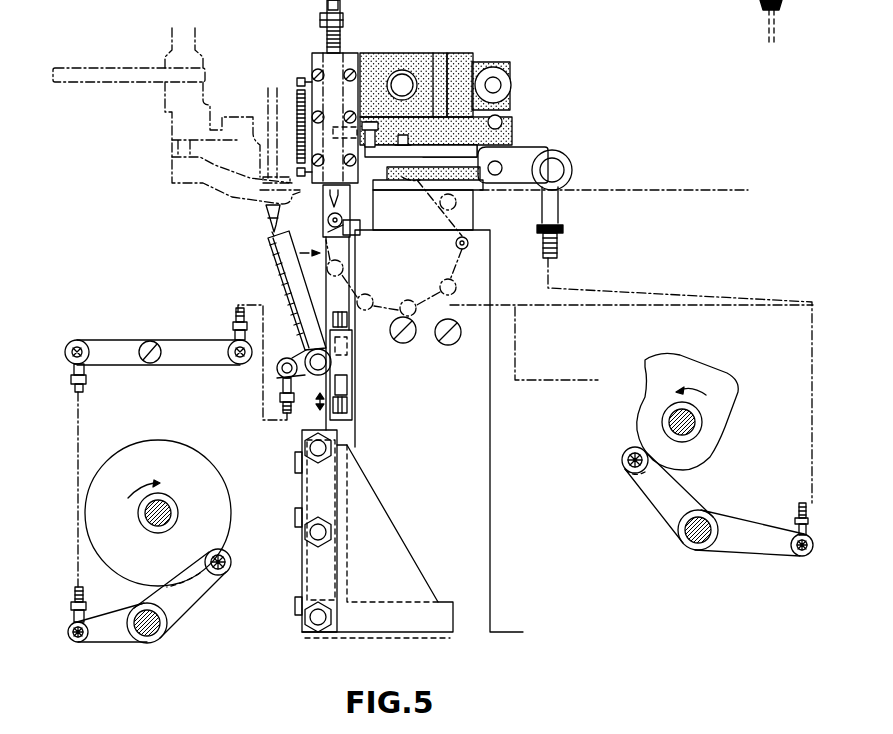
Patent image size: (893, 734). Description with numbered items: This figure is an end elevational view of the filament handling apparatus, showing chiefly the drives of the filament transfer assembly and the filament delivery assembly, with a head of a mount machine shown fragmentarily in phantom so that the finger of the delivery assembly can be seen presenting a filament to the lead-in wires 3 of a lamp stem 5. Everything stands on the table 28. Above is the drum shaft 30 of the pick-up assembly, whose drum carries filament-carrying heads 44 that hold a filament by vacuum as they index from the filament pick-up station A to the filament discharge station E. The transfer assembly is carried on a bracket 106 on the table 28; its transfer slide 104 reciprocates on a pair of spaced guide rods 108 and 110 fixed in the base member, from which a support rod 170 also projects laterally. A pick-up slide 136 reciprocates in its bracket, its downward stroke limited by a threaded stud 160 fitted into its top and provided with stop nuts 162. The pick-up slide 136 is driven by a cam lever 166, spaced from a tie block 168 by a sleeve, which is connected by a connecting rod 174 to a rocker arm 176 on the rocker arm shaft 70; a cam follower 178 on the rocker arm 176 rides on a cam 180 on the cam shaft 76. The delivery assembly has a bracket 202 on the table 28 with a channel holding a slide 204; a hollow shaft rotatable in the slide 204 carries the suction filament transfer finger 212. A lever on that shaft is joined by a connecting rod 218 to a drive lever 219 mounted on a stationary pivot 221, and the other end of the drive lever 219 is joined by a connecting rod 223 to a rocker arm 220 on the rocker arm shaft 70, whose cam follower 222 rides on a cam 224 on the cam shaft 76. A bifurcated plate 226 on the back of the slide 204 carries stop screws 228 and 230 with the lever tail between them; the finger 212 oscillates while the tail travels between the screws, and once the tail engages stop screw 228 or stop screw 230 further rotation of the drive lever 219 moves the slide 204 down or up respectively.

The lead-in wires 3 is at (270, 230).
The lamp stem 5 is at (266, 210).
The table 28 is at (510, 632).
The drum shaft 30 is at (688, 188).
The filament-carrying head 44 is at (466, 239).
The rocker arm shaft 70 is at (152, 628).
The cam shaft 76 is at (172, 513).
The transfer slide 104 is at (420, 54).
The bracket 106 is at (490, 522).
The guide rod 108 is at (400, 78).
The guide rod 110 is at (493, 78).
The pick-up slide 136 is at (322, 50).
The threaded stud 160 is at (340, 7).
The stop nuts 162 is at (343, 22).
The cam lever 166 is at (533, 153).
The tie block 168 is at (510, 105).
The support rod 170 is at (502, 122).
The connecting rod 174 is at (558, 213).
The rocker arm 176 is at (655, 505).
The cam follower 178 is at (627, 453).
The cam 180 is at (675, 358).
The bracket 202 is at (372, 505).
The slide 204 is at (332, 427).
The suction filament transfer finger 212 is at (280, 265).
The connecting rod 218 is at (233, 322).
The drive lever 219 is at (113, 340).
The rocker arm 220 is at (200, 587).
The stationary pivot 221 is at (164, 333).
The cam follower 222 is at (221, 550).
The connecting rod 223 is at (83, 368).
The cam 224 is at (200, 482).
The bifurcated plate 226 is at (348, 382).
The stop screw 228 is at (348, 320).
The stop screw 230 is at (348, 407).
The filament pick-up station A is at (403, 276).
The filament discharge station E is at (328, 218).